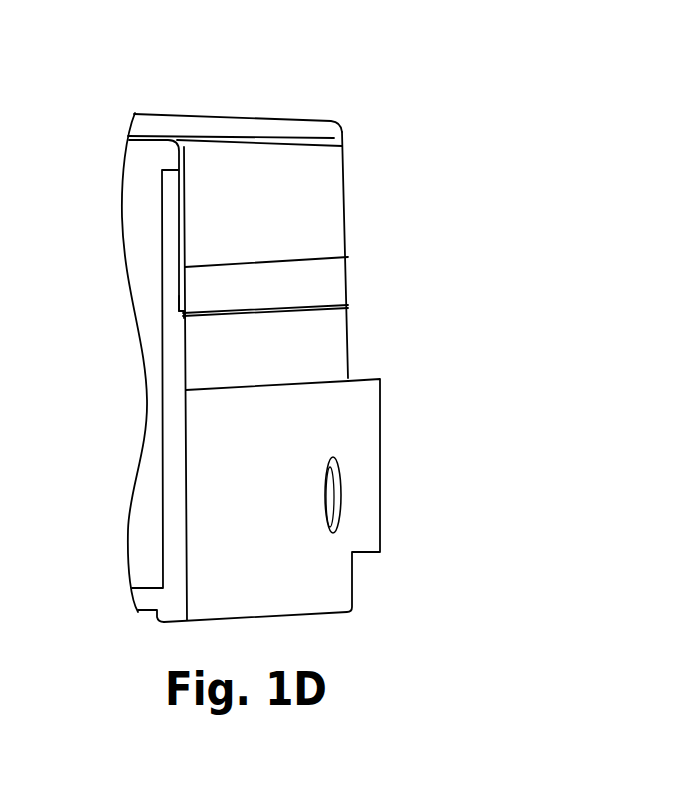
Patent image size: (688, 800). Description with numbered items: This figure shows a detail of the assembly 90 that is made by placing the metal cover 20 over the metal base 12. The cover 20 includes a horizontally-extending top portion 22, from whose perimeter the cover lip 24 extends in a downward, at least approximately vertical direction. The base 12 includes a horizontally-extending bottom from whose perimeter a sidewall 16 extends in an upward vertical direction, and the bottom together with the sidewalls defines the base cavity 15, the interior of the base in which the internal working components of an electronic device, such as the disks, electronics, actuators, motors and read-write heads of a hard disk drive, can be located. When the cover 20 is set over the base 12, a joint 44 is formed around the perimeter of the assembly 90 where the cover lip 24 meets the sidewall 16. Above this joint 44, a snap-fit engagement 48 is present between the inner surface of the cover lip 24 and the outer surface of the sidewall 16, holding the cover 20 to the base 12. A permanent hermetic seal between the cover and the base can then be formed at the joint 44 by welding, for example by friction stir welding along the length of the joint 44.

The assembly 90 is at (351, 69).
The horizontally-extending top portion 22 is at (166, 114).
The metal cover 20 is at (263, 127).
The cover lip 24 is at (322, 178).
The joint 44 is at (358, 304).
The snap-fit engagement 48 is at (176, 300).
The sidewall 16 is at (317, 353).
The metal base 12 is at (362, 408).
The base cavity 15 is at (153, 508).